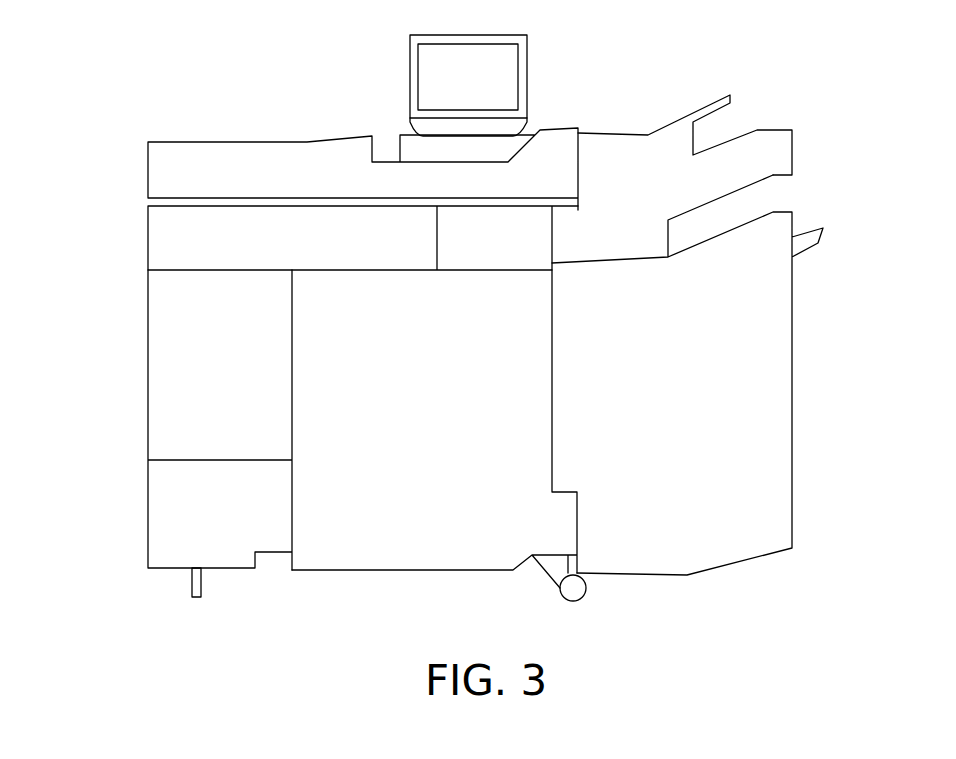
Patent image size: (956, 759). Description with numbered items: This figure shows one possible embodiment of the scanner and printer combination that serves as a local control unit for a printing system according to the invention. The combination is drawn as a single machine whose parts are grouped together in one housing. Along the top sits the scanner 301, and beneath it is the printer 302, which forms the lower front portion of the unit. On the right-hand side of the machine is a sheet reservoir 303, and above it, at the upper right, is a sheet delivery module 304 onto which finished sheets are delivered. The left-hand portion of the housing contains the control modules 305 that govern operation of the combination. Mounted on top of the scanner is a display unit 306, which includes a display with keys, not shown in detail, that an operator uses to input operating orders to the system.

The scanner 301 is at (227, 142).
The printer 302 is at (335, 570).
The sheet reservoir 303 is at (792, 393).
The sheet delivery module 304 is at (792, 162).
The control modules 305 is at (147, 362).
The display unit 306 is at (527, 73).